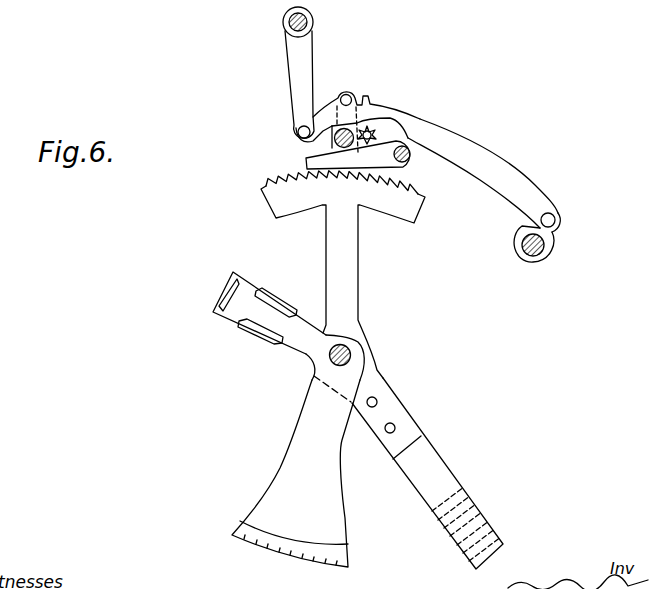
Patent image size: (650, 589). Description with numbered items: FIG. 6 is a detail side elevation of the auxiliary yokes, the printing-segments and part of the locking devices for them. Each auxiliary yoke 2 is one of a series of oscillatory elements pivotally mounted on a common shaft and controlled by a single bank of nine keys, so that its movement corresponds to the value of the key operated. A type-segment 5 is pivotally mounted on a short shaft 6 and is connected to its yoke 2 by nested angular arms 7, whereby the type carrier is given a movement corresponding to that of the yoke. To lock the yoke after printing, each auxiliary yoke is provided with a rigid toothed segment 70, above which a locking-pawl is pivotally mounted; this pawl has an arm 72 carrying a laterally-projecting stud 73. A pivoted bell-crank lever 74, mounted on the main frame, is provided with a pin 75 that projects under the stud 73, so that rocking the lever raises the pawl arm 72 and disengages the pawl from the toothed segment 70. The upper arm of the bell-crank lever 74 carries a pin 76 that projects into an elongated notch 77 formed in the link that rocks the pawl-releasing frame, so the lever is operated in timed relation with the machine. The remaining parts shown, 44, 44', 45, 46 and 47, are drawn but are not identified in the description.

The auxiliary yoke 2 is at (427, 473).
The type-segment 5 is at (296, 473).
The short shaft 6 is at (352, 355).
The nested angular arm 7 is at (222, 292).
The pin at end of arm 44 is at (563, 231).
The lower pin 44' is at (534, 255).
The curved arm 45 is at (498, 152).
The link bar 46 is at (298, 62).
The pivot pin of link 47 is at (283, 20).
The toothed segment 70 is at (403, 209).
The arm 72 is at (373, 128).
The stud 73 is at (351, 180).
The bell-crank lever 74 is at (318, 144).
The pin 75 is at (342, 186).
The pin 76 is at (345, 94).
The elongated notch 77 is at (358, 98).